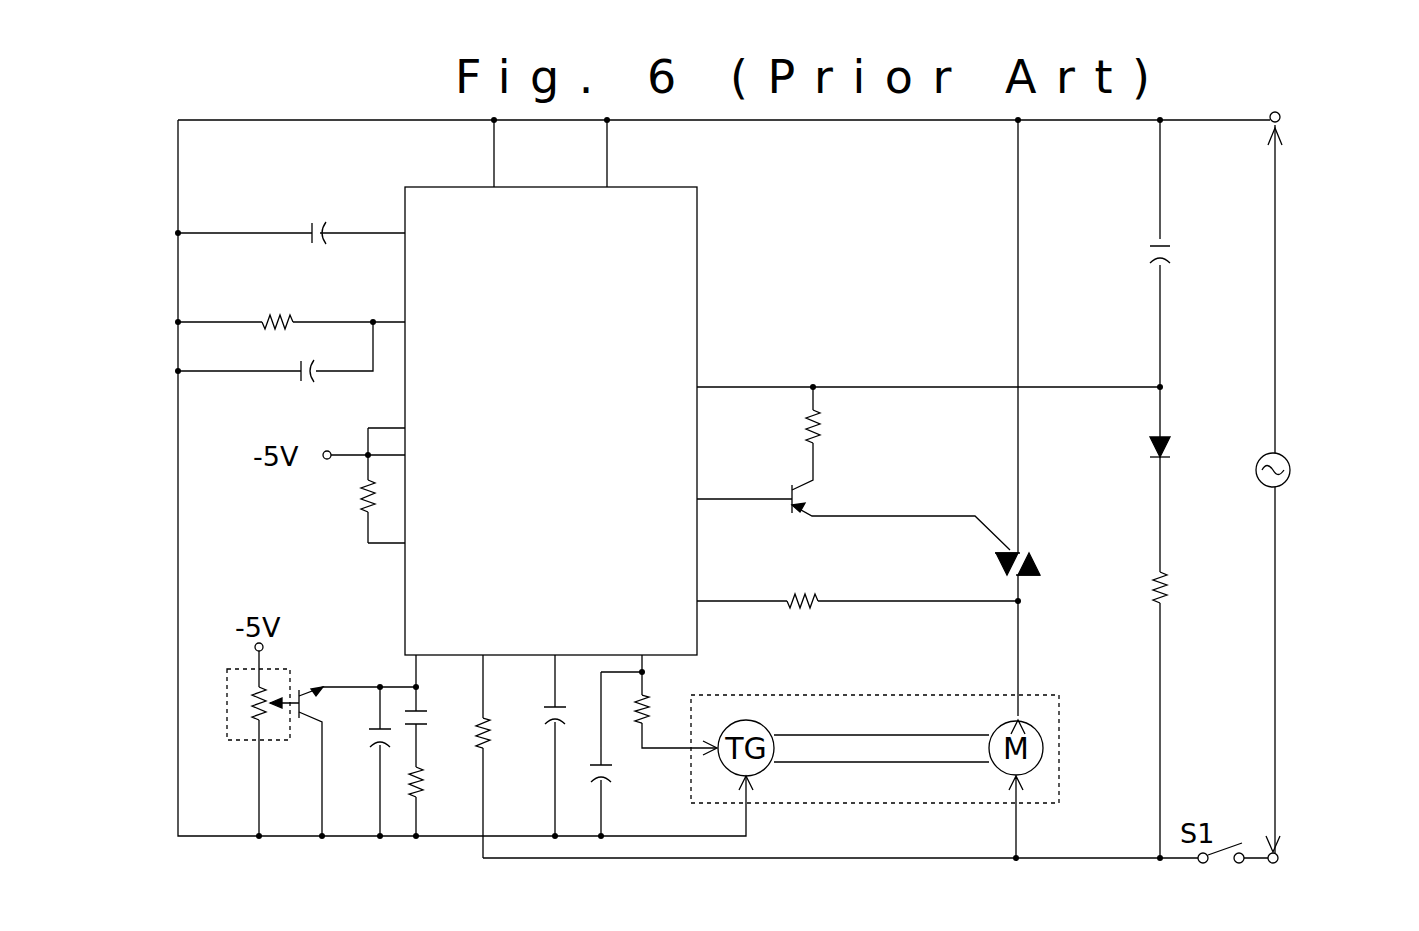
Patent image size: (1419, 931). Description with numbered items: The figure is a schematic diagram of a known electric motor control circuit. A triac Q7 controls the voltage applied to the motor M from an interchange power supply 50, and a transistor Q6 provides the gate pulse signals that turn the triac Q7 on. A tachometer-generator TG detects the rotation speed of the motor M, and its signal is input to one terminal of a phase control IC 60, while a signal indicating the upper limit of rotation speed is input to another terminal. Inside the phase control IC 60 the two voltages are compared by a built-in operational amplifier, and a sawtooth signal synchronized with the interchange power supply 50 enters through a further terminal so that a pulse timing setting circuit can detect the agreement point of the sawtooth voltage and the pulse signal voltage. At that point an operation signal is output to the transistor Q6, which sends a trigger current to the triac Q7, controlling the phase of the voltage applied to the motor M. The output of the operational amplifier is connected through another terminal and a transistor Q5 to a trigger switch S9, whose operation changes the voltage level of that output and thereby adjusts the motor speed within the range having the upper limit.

The phase control IC 60 is at (697, 280).
The interchange power supply 50 is at (1291, 463).
The transistor Q5 is at (343, 745).
The transistor Q6 is at (853, 468).
The triac Q7 is at (1026, 548).
The trigger switch S9 is at (236, 739).